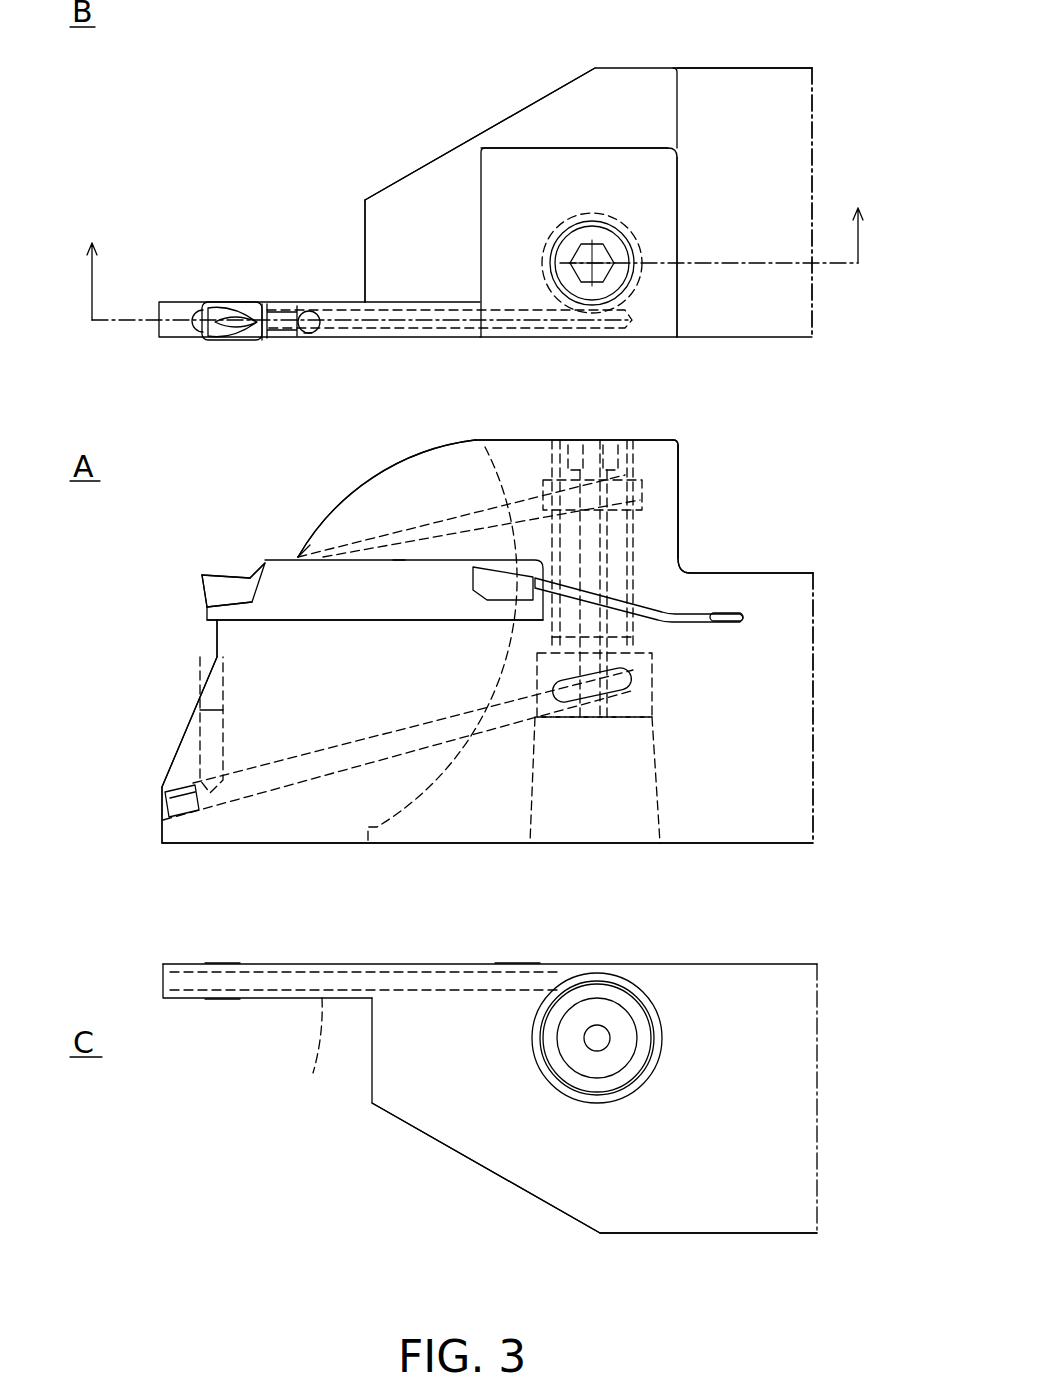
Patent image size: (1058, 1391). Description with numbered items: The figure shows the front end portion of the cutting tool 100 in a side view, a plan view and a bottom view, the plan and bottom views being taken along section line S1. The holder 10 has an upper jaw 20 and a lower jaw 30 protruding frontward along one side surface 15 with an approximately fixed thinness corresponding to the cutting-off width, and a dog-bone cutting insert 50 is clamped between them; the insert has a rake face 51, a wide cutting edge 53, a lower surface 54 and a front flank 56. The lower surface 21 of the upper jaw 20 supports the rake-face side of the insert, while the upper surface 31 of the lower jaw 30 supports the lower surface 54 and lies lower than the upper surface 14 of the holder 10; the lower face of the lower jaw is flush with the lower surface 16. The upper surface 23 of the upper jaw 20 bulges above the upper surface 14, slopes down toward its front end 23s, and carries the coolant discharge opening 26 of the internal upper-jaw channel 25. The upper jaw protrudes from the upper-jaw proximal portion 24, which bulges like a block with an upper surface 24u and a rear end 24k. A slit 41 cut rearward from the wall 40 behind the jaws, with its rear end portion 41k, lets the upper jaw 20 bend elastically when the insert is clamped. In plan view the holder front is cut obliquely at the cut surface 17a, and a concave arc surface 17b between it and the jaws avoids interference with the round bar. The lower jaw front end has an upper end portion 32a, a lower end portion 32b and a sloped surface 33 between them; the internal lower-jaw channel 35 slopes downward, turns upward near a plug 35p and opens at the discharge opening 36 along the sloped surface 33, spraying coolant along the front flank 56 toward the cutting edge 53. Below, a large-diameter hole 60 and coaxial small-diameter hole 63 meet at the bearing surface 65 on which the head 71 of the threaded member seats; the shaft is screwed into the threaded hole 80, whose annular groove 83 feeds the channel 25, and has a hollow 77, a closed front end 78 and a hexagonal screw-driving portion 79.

The holder 10 is at (664, 64).
The cutting tool 100 is at (268, 152).
The upper surface 14 is at (785, 320).
The side surface 15 is at (795, 338).
The lower surface 16 is at (460, 845).
The cut surface 17a is at (445, 152).
The arc surface 17b is at (430, 205).
The upper jaw 20 is at (300, 296).
The lower surface of the upper jaw 21 is at (397, 565).
The upper surface of the upper jaw 23 is at (383, 492).
The front end of the upper jaw 23s is at (296, 555).
The upper-jaw proximal portion 24 is at (689, 207).
The upper surface of the upper-jaw proximal portion 24u is at (658, 168).
The rear end of the upper-jaw proximal portion 24k is at (679, 290).
The internal upper-jaw channel 25 is at (432, 318).
The coolant discharge opening 26 is at (308, 334).
The lower jaw 30 is at (174, 350).
The upper surface of the lower jaw 31 is at (330, 622).
The upper end portion 32a is at (215, 640).
The lower end portion 32b is at (160, 843).
The sloped surface 33 is at (178, 750).
The internal lower-jaw channel 35 is at (293, 780).
The plug 35p is at (160, 812).
The coolant discharge opening 36 is at (200, 690).
The wall 40 is at (475, 598).
The slit 41 is at (683, 607).
The rear end portion of the slit 41k is at (745, 618).
The cutting insert 50 is at (200, 291).
The rake face 51 is at (230, 573).
The cutting edge 53 is at (200, 576).
The lower surface 54 is at (258, 622).
The front flank 56 is at (200, 600).
The large-diameter hole 60 is at (550, 818).
The small-diameter hole 63 is at (640, 638).
The bearing surface 65 is at (640, 673).
The head 71 is at (650, 700).
The hollow 77 is at (537, 643).
The front end 78 is at (618, 245).
The screw-driving portion 79 is at (582, 258).
The threaded hole 80 is at (625, 552).
The annular groove 83 is at (592, 218).
The section line S1 is at (479, 249).